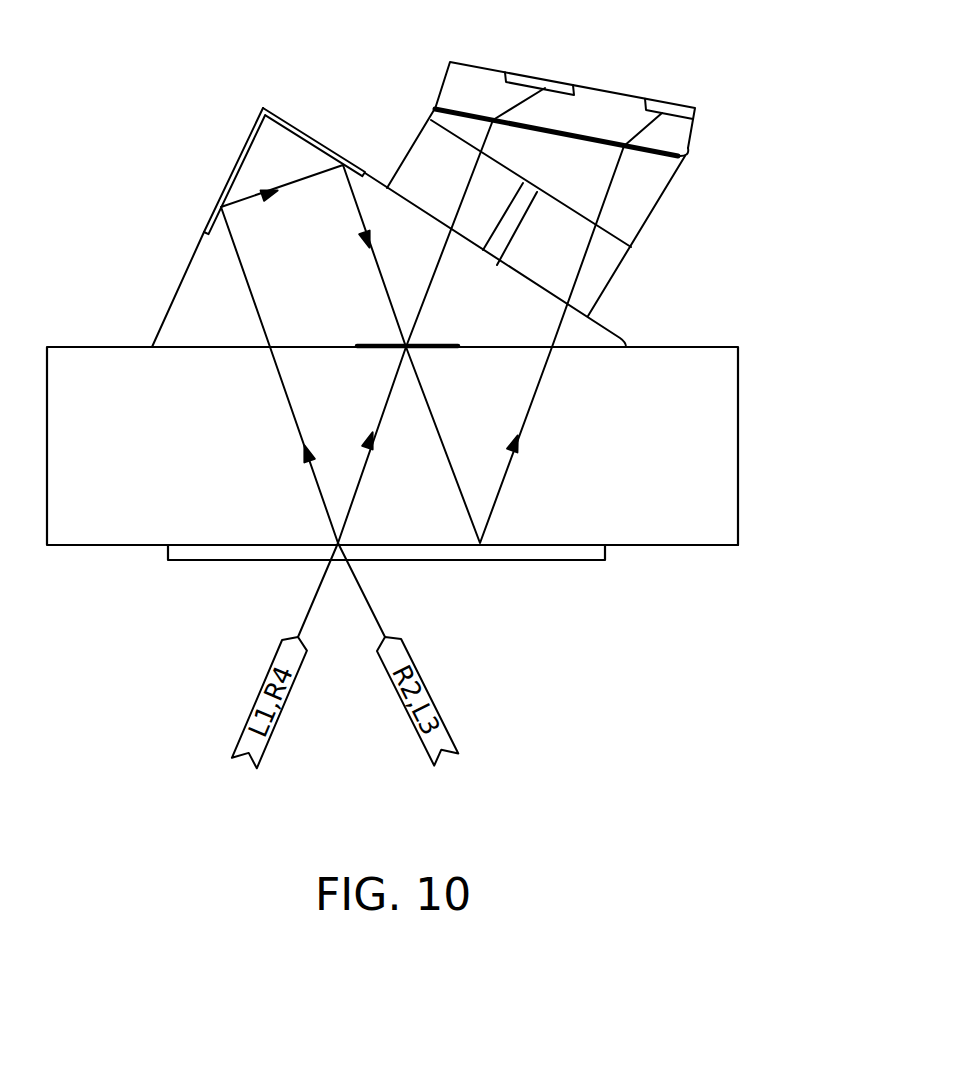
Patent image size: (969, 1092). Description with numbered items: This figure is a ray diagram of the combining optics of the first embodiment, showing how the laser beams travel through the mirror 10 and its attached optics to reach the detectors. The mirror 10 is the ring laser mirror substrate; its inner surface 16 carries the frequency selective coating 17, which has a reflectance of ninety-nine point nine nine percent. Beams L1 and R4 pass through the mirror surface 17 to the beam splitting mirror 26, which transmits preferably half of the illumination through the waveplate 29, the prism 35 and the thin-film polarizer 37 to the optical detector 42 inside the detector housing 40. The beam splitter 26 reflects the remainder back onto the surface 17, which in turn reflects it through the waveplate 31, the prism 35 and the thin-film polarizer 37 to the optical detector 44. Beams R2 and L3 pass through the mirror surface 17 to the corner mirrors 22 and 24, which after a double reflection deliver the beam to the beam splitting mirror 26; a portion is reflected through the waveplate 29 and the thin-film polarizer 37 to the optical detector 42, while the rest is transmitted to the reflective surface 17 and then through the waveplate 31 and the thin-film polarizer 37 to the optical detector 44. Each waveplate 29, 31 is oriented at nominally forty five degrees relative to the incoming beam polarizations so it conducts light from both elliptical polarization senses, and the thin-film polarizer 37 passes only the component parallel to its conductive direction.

The mirror 10 is at (707, 450).
The inner surface 16 is at (668, 547).
The frequency selective coating 17 is at (532, 552).
The mirror surface 22 is at (240, 148).
The mirror surface 24 is at (313, 135).
The beam splitting mirror surface 26 is at (430, 343).
The waveplate 29 is at (420, 148).
The waveplate 31 is at (607, 262).
The prism 35 is at (655, 187).
The thin-film polarizer 37 is at (437, 107).
The detector housing 40 is at (472, 77).
The optical detector 42 is at (547, 82).
The optical detector 44 is at (653, 102).